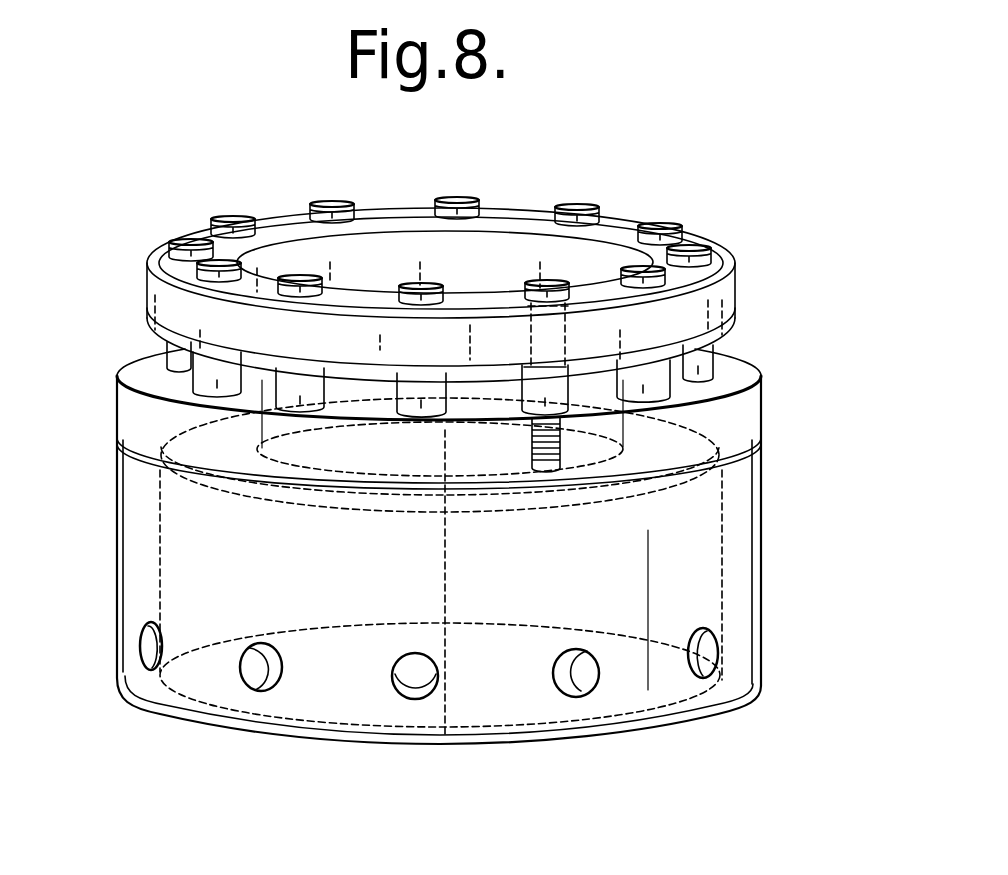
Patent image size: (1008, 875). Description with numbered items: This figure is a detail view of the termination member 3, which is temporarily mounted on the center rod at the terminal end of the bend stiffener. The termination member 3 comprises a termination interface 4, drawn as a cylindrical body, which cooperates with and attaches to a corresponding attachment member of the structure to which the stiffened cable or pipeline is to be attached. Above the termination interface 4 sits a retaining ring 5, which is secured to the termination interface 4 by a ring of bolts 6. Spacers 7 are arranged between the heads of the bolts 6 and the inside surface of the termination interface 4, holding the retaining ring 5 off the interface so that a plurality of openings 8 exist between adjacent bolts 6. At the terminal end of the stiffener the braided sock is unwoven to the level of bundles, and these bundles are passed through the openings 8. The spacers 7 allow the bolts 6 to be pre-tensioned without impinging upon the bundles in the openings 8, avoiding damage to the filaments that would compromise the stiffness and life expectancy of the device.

The termination member 3 is at (467, 440).
The termination interface 4 is at (138, 578).
The retaining ring 5 is at (717, 310).
The bolts 6 is at (656, 238).
The spacers 7 is at (207, 377).
The openings 8 is at (690, 388).